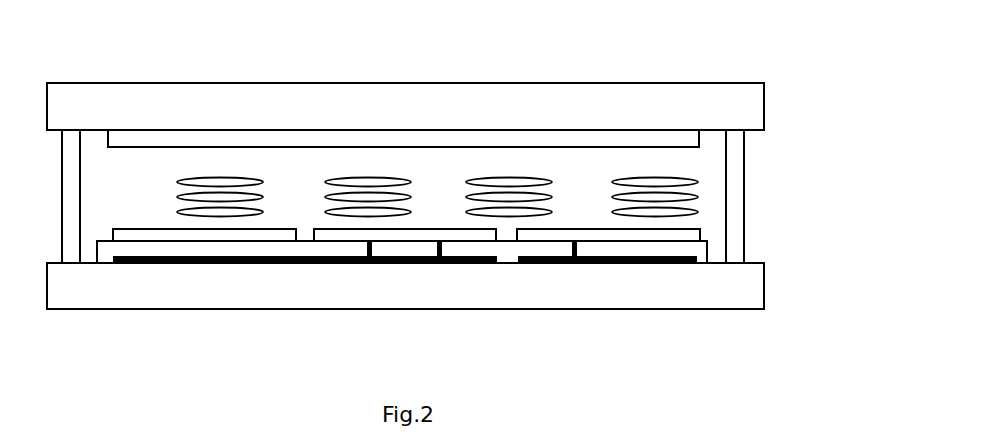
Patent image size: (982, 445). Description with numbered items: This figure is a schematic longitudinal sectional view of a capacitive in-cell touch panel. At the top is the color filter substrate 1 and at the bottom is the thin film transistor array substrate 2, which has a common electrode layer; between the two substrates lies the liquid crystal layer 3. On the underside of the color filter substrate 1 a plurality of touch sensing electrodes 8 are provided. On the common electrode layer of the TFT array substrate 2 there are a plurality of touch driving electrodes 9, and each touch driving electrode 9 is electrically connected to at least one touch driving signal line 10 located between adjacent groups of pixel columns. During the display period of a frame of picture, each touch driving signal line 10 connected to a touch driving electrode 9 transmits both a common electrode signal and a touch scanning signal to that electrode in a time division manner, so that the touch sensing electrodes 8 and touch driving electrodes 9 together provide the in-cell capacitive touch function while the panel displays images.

The color filter substrate 1 is at (449, 95).
The thin film transistor array substrate 2 is at (449, 285).
The liquid crystal layer 3 is at (700, 195).
The touch sensing electrode 8 is at (403, 83).
The touch driving electrode 9 is at (406, 301).
The touch driving signal line 10 is at (402, 309).